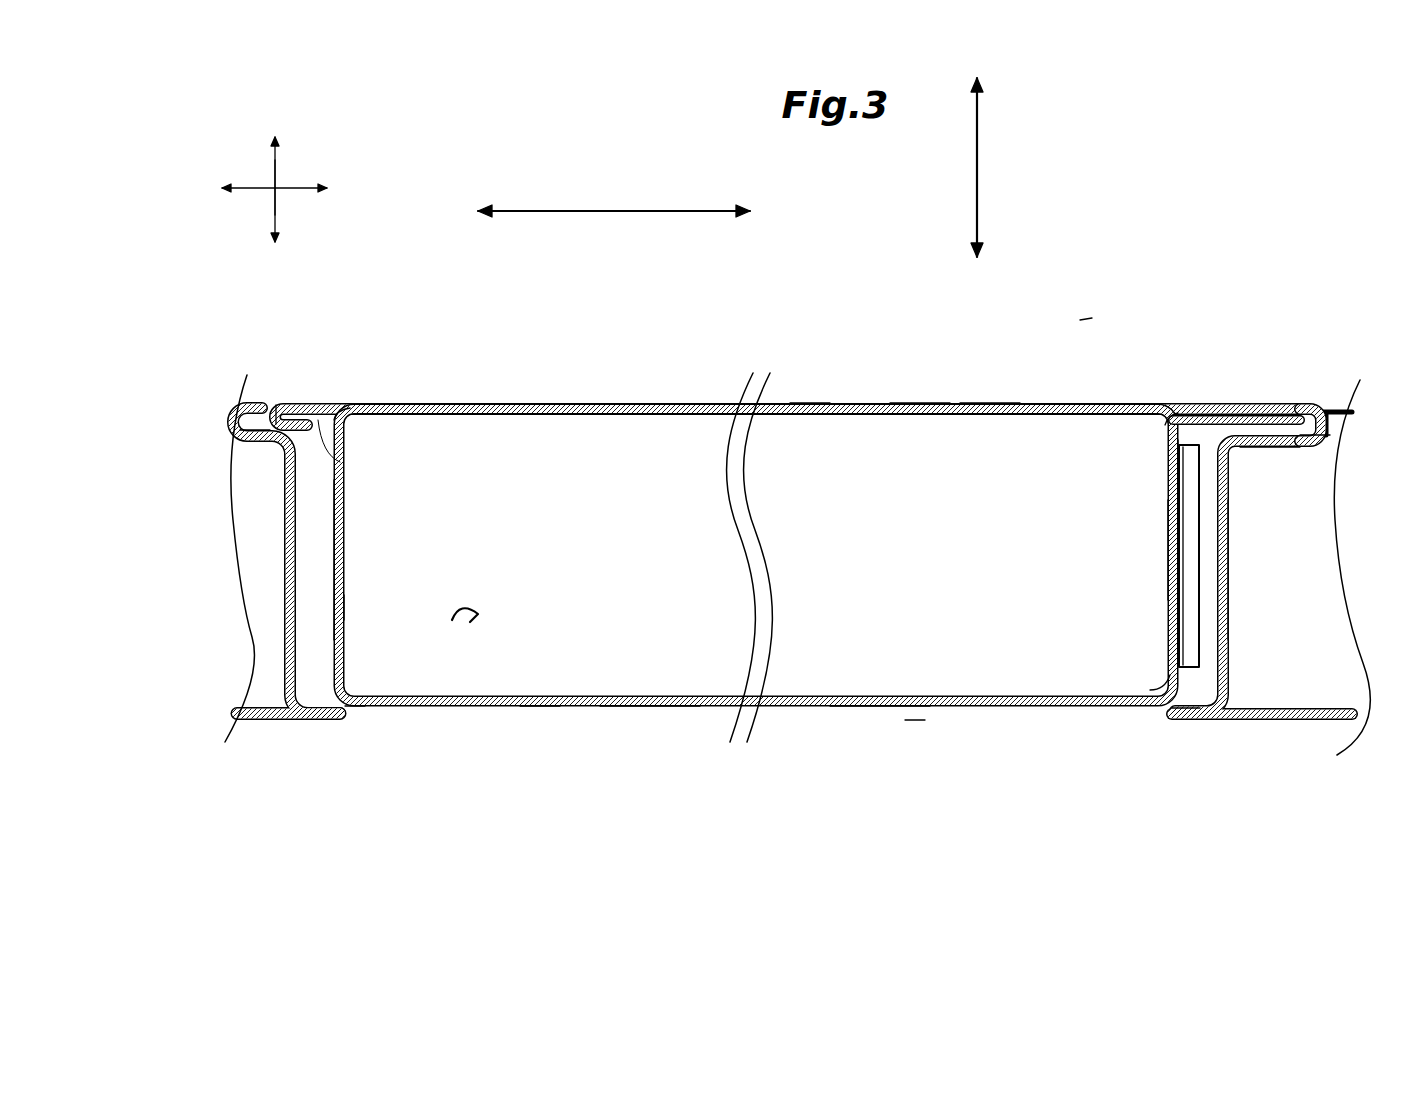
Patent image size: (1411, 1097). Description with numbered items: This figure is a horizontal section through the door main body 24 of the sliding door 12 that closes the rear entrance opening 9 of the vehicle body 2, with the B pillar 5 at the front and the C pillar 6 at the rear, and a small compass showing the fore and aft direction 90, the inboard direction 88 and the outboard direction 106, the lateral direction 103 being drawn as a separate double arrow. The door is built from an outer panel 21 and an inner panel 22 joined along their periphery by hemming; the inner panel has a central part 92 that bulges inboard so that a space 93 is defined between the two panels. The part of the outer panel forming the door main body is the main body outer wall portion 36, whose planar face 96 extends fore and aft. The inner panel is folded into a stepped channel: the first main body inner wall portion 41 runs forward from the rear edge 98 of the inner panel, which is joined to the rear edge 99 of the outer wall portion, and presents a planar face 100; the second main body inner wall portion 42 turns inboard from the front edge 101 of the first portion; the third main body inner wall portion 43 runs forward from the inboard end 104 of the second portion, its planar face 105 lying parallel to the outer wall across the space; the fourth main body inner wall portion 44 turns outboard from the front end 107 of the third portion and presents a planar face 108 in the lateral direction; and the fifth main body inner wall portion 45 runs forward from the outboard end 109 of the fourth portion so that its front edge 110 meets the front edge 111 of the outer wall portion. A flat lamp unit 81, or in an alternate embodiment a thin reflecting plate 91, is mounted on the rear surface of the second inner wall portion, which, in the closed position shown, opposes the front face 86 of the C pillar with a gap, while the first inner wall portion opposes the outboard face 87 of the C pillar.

The vehicle body 2 is at (1089, 303).
The B pillar 5 is at (275, 722).
The C pillar 6 is at (1268, 722).
The rear entrance opening 9 is at (1162, 720).
The sliding door 12 is at (915, 387).
The outer panel 21 is at (607, 400).
The inner panel 22 is at (625, 707).
The door main body 24 is at (513, 396).
The main body outer wall portion 36 is at (990, 402).
The first main body inner wall portion 41 is at (1178, 460).
The second main body inner wall portion 42 is at (1168, 537).
The third main body inner wall portion 43 is at (873, 707).
The fourth main body inner wall portion 44 is at (345, 556).
The fifth main body inner wall portion 45 is at (330, 455).
The lamp unit 81 is at (1126, 556).
The reflecting plate 91 is at (1185, 620).
The front face 86 is at (1228, 565).
The outboard face 87 is at (1290, 449).
The inboard direction 88 is at (278, 208).
The fore and aft direction 90 is at (542, 211).
The central part 92 is at (922, 731).
The space 93 is at (452, 620).
The planar face 96 is at (258, 186).
The rear edge 98 is at (1313, 405).
The rear edge 99 is at (1300, 435).
The planar face 100 is at (1262, 405).
The front edge 101 is at (1160, 418).
The lateral direction 103 is at (978, 180).
The inboard end 104 is at (1138, 678).
The planar face 105 is at (535, 707).
The outboard direction 106 is at (278, 167).
The front end 107 is at (369, 724).
The planar face 108 is at (345, 607).
The outboard end 109 is at (352, 428).
The front edge 110 is at (302, 400).
The front edge 111 is at (272, 436).